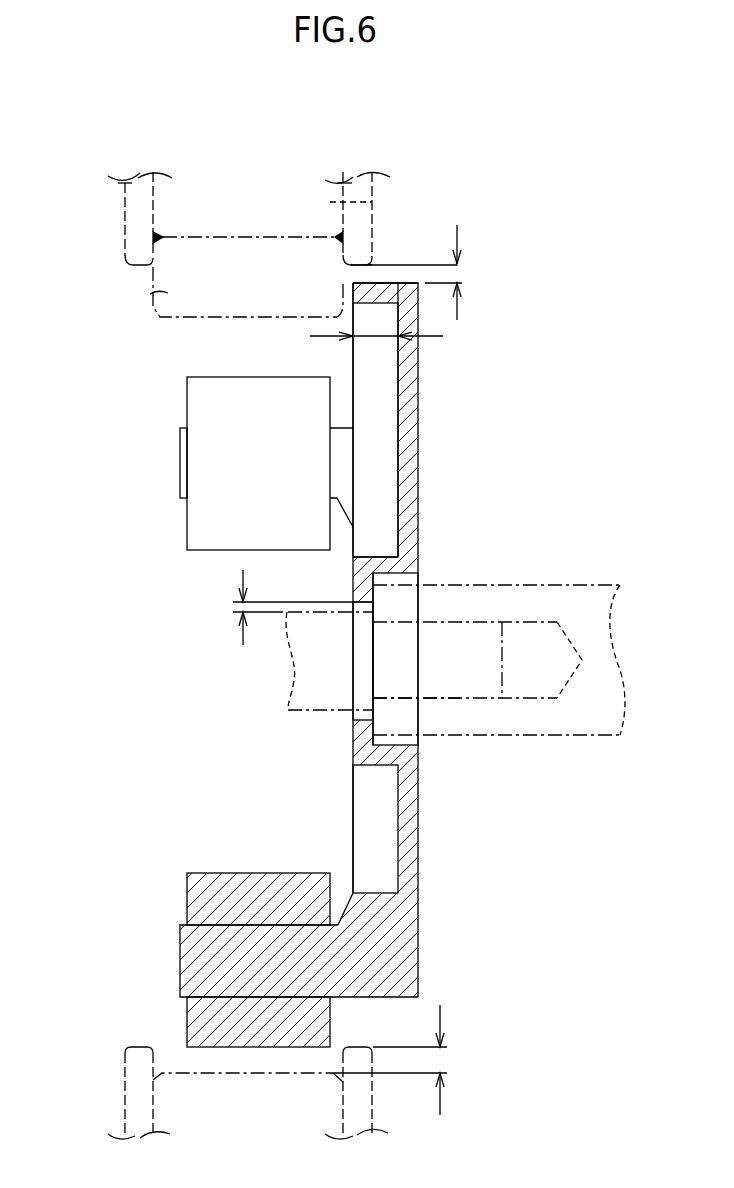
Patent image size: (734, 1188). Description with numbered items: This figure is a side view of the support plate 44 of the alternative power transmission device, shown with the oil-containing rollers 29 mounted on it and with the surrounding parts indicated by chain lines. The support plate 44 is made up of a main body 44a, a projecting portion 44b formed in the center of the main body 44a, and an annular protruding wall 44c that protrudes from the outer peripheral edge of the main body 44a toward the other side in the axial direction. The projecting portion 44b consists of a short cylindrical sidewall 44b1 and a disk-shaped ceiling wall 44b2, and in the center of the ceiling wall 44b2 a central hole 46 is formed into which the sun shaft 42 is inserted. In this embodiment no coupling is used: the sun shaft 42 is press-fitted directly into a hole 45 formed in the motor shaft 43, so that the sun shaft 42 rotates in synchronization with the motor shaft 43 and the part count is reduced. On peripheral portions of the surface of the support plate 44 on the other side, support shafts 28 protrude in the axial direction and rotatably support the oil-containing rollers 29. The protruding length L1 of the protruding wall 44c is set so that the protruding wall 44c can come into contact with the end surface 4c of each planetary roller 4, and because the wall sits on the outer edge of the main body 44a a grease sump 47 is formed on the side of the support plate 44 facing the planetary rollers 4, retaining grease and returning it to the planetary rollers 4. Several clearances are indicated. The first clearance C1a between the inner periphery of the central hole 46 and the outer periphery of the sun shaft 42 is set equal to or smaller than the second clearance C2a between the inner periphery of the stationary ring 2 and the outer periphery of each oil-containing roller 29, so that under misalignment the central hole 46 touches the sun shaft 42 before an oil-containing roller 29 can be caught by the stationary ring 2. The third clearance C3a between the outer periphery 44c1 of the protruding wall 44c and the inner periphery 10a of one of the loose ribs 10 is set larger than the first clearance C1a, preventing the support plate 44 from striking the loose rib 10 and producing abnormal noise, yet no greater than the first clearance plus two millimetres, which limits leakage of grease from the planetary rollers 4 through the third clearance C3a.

The stationary ring 2 is at (380, 202).
The planetary roller 4 is at (153, 293).
The end surface of planetary roller 4c is at (356, 280).
The loose rib 10 is at (132, 210).
The inner periphery of loose rib 10a is at (140, 265).
The support shaft 28 is at (297, 955).
The oil-containing roller 29 is at (200, 401).
The sun shaft 42 is at (490, 665).
The motor shaft 43 is at (582, 720).
The support plate 44 is at (425, 432).
The main body 44a is at (403, 383).
The projecting portion 44b is at (513, 458).
The sidewall 44b1 is at (380, 565).
The ceiling wall 44b2 is at (362, 587).
The protruding wall 44c is at (360, 292).
The outer periphery of protruding wall 44c1 is at (362, 283).
The hole 45 is at (434, 698).
The central hole 46 is at (364, 712).
The grease sump 47 is at (373, 390).
The first clearance C1a is at (274, 607).
The second clearance C2a is at (412, 1060).
The third clearance C3a is at (439, 272).
The protruding length L1 is at (440, 337).